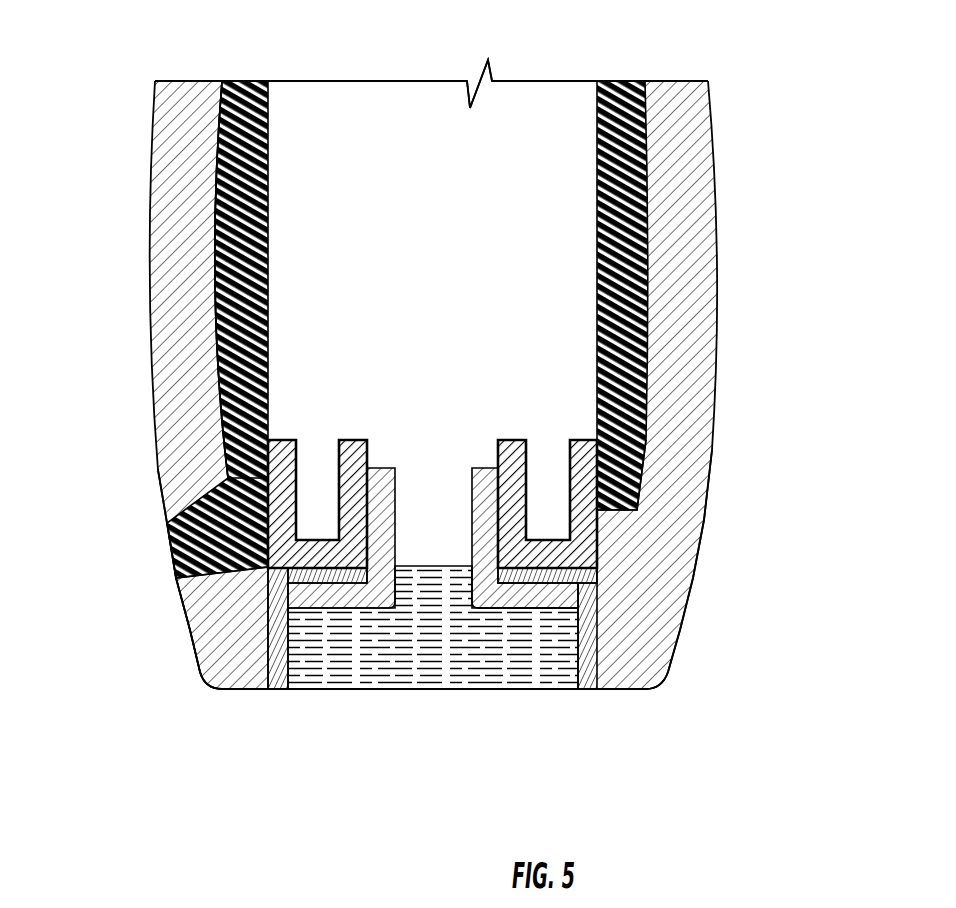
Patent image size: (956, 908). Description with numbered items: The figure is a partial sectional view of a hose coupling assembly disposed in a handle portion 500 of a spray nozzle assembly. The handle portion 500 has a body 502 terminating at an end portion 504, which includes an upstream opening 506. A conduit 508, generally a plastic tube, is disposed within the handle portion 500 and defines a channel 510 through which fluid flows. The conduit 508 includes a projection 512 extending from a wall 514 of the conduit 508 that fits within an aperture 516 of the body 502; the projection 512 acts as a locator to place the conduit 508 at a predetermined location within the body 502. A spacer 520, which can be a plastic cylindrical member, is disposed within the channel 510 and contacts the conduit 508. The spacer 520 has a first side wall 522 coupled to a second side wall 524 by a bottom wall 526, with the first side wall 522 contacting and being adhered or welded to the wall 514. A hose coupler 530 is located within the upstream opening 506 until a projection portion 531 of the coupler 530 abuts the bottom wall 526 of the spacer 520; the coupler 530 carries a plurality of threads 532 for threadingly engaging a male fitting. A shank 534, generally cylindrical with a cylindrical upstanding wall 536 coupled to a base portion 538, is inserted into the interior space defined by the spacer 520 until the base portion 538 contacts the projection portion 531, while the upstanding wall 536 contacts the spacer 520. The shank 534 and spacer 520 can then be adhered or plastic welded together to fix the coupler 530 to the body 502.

The handle portion 500 is at (720, 212).
The body 502 is at (162, 128).
The end portion 504 is at (208, 702).
The upstream opening 506 is at (603, 713).
The conduit 508 is at (222, 212).
The channel 510 is at (500, 117).
The projection 512 is at (177, 592).
The wall 514 is at (222, 330).
The aperture 516 is at (214, 378).
The spacer 520 is at (232, 476).
The first side wall 522 is at (598, 460).
The second side wall 524 is at (512, 440).
The bottom wall 526 is at (598, 528).
The hose coupler 530 is at (282, 697).
The projection portion 531 is at (526, 574).
The threads 532 is at (381, 667).
The shank 534 is at (528, 612).
The upstanding wall 536 is at (480, 468).
The base portion 538 is at (477, 598).